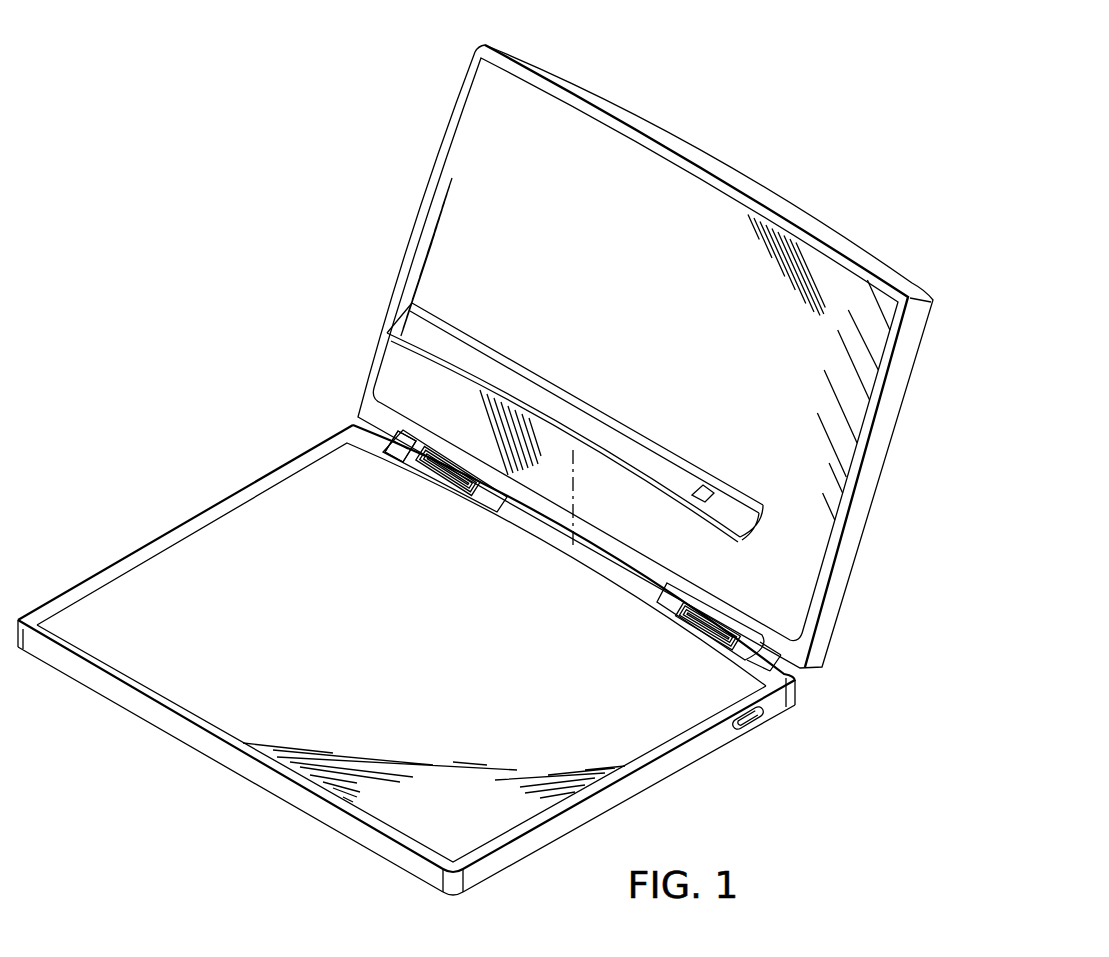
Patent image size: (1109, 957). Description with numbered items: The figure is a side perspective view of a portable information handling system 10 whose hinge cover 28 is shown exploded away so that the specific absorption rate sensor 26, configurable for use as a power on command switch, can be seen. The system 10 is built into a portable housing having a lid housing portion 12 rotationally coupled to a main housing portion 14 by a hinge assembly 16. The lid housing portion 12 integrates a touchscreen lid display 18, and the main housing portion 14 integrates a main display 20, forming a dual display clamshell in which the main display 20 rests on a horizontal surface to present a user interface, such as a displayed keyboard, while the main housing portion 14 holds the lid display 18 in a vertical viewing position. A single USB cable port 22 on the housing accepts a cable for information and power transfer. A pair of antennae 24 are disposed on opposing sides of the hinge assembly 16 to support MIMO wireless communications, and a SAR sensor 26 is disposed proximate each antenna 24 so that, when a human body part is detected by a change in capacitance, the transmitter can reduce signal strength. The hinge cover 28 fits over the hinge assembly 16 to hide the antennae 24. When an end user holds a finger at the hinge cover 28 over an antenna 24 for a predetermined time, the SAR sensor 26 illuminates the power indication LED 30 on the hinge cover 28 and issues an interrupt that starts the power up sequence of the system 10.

The portable information handling system 10 is at (236, 124).
The lid housing portion 12 is at (719, 161).
The main housing portion 14 is at (157, 741).
The hinge assembly 16 is at (374, 452).
The touchscreen lid display 18 is at (463, 147).
The main display 20 is at (112, 591).
The USB cable port 22 is at (744, 719).
The antenna 24 is at (478, 503).
The specific absorption rate (SAR) sensor 26 is at (500, 508).
The hinge cover 28 is at (588, 402).
The power indication LED 30 is at (704, 490).